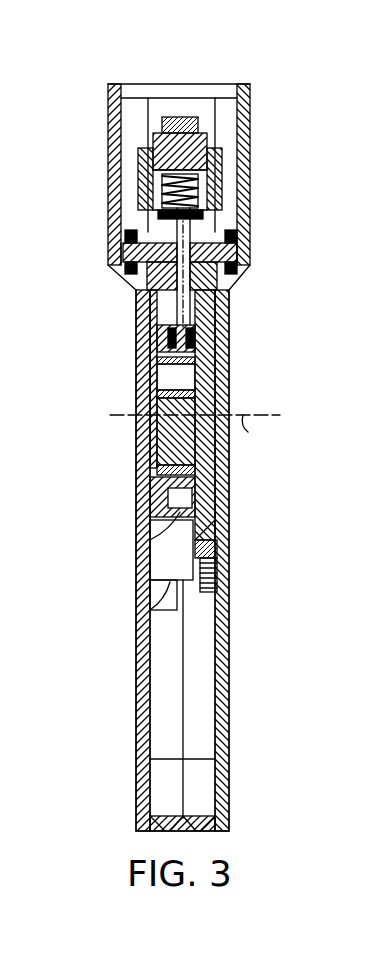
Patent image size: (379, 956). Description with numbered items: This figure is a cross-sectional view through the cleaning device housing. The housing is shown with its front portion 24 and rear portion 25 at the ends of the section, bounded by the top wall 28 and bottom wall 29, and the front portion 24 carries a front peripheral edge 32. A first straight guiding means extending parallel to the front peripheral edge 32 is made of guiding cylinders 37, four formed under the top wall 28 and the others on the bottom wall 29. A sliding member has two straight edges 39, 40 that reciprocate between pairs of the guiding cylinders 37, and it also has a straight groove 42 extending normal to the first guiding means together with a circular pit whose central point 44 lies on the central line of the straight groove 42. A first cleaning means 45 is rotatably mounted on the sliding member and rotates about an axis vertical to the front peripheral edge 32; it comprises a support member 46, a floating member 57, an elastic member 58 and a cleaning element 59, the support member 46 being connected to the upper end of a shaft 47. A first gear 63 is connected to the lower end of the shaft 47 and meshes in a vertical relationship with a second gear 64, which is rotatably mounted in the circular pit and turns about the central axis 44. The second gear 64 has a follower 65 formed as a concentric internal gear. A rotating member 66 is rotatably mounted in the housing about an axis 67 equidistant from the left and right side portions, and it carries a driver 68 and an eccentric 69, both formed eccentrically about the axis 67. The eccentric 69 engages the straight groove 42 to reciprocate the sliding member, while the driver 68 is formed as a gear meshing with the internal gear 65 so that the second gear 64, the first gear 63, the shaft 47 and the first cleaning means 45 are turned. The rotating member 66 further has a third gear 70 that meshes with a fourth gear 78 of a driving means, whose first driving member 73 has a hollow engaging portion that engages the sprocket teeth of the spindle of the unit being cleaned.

The front portion 24 is at (240, 96).
The rear portion 25 is at (212, 828).
The top wall 28 is at (110, 138).
The bottom wall 29 is at (244, 114).
The front peripheral edge 32 is at (136, 80).
The guiding cylinders 37 is at (124, 236).
The straight edge 39 is at (122, 252).
The straight edge 40 is at (238, 248).
The straight groove 42 is at (152, 376).
The central point 44 is at (145, 414).
The first cleaning means 45 is at (163, 108).
The support member 46 is at (222, 170).
The shaft 47 is at (146, 288).
The floating member 57 is at (212, 147).
The elastic member 58 is at (160, 193).
The cleaning element 59 is at (182, 116).
The first gear 63 is at (200, 342).
The second gear 64 is at (150, 540).
The follower 65 is at (150, 392).
The rotating member 66 is at (222, 524).
The axis 67 is at (198, 437).
The driver 68 is at (148, 444).
The eccentric 69 is at (150, 472).
The third gear 70 is at (195, 558).
The first driving member 73 is at (150, 612).
The fourth gear 78 is at (213, 636).